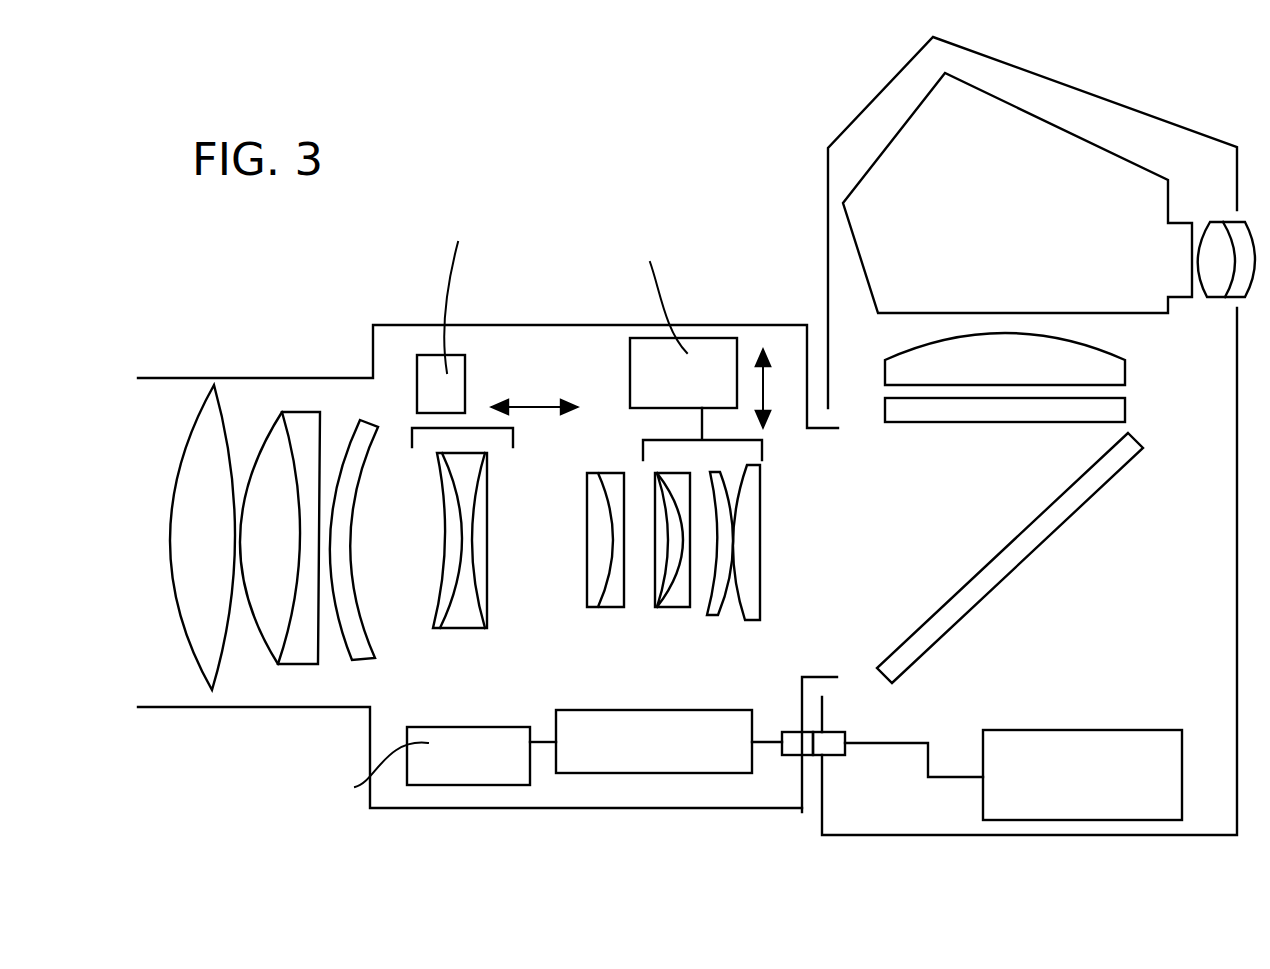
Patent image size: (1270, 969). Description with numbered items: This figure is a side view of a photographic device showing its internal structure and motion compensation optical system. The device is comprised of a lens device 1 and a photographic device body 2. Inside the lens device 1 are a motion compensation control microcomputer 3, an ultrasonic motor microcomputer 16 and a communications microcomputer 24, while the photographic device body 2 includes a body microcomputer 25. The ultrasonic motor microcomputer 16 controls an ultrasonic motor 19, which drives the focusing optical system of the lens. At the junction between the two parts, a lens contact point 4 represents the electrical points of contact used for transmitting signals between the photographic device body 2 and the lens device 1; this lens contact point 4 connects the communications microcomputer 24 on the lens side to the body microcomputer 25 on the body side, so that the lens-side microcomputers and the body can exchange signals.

The lens device 1 is at (263, 392).
The photographic device body 2 is at (1173, 120).
The motion compensation control microcomputer 3 is at (713, 348).
The lens contact point 4 is at (793, 747).
The ultrasonic motor microcomputer 16 is at (497, 770).
The ultrasonic motor 19 is at (424, 363).
The communications microcomputer 24 is at (617, 767).
The body microcomputer 25 is at (1057, 810).